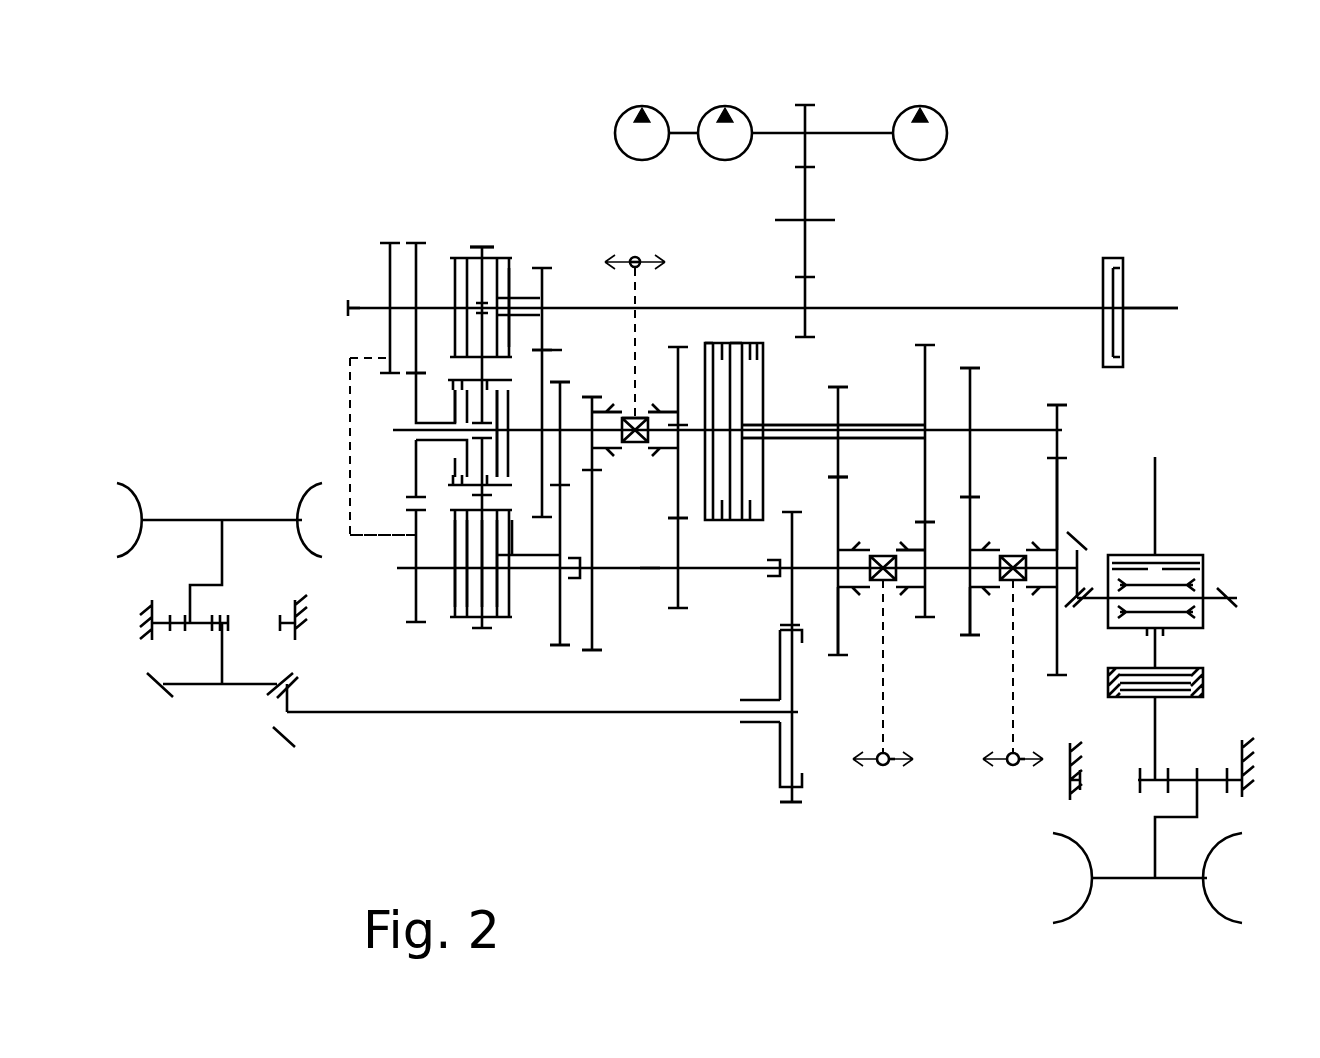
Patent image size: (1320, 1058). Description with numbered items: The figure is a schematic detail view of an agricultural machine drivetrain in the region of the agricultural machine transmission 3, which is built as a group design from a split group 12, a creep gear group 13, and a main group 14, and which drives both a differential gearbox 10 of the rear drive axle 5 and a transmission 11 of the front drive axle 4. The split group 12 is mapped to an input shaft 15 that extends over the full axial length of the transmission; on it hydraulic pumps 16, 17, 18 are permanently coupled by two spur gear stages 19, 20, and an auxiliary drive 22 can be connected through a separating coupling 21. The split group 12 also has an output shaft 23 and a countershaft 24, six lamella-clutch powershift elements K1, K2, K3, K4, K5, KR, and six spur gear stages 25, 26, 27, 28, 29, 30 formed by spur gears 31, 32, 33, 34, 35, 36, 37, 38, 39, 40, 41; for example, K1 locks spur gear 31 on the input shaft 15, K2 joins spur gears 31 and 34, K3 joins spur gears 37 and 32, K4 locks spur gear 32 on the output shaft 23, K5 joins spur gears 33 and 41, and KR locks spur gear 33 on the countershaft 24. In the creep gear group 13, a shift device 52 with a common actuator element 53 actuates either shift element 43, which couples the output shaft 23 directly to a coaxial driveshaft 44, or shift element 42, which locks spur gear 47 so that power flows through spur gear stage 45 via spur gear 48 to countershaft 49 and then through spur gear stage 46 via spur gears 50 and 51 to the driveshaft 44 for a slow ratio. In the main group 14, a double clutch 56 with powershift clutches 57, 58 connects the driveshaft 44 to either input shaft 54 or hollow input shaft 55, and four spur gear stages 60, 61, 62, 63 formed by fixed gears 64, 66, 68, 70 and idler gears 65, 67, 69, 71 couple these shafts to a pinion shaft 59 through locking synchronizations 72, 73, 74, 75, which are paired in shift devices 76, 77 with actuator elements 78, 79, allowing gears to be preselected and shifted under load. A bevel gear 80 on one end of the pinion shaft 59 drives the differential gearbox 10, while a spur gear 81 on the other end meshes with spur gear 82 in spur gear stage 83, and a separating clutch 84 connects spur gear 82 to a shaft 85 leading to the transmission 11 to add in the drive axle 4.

The agricultural machine transmission 3 is at (246, 124).
The drive axle 4 is at (190, 568).
The drive axle 5 is at (1200, 650).
The differential gearbox 10 is at (1195, 535).
The transmission 11 is at (268, 756).
The split group 12 is at (476, 168).
The creep gear group 13 is at (632, 668).
The main group 14 is at (937, 322).
The input shaft 15 is at (348, 306).
The hydraulic pump 16 is at (638, 105).
The hydraulic pump 17 is at (733, 105).
The hydraulic pump 18 is at (932, 106).
The spur gear stage 19 is at (822, 274).
The spur gear stage 20 is at (822, 164).
The separating coupling 21 is at (1113, 258).
The auxiliary drive 22 is at (1170, 304).
The output shaft 23 is at (393, 430).
The countershaft 24 is at (412, 640).
The spur gear stage 25 is at (413, 300).
The spur gear stage 26 is at (482, 612).
The spur gear stage 27 is at (546, 346).
The spur gear stage 28 is at (388, 300).
The spur gear stage 29 is at (350, 360).
The spur gear stage 30 is at (500, 586).
The spur gear 31 is at (482, 245).
The spur gear 32 is at (512, 300).
The spur gear 33 is at (467, 632).
The spur gear 34 is at (543, 268).
The spur gear 35 is at (560, 385).
The spur gear 36 is at (470, 362).
The spur gear 37 is at (414, 460).
The spur gear 38 is at (406, 355).
The spur gear 39 is at (415, 546).
The spur gear 40 is at (560, 392).
The spur gear 41 is at (560, 632).
The shift element 42 is at (612, 410).
The shift element 43 is at (640, 414).
The driveshaft 44 is at (680, 345).
The spur gear stage 45 is at (594, 560).
The spur gear stage 46 is at (690, 570).
The spur gear 47 is at (598, 396).
The spur gear 48 is at (594, 662).
The countershaft 49 is at (650, 570).
The spur gear 50 is at (638, 447).
The spur gear 51 is at (665, 410).
The shift device 52 is at (628, 250).
The actuator element 53 is at (637, 255).
The input shaft 54 is at (968, 366).
The input shaft 55 is at (870, 425).
The double clutch 56 is at (733, 336).
The powershift clutch 57 is at (707, 343).
The powershift clutch 58 is at (750, 343).
The pinion shaft 59 is at (1080, 585).
The spur gear stage 60 is at (1062, 454).
The spur gear stage 61 is at (832, 470).
The spur gear stage 62 is at (980, 476).
The spur gear stage 63 is at (920, 518).
The fixed gear 64 is at (1054, 403).
The idler gear 65 is at (1057, 505).
The fixed gear 66 is at (838, 386).
The idler gear 67 is at (838, 496).
The fixed gear 68 is at (838, 386).
The idler gear 69 is at (968, 616).
The fixed gear 70 is at (920, 344).
The idler gear 71 is at (935, 550).
The shift element 72 is at (1030, 606).
The shift element 73 is at (860, 616).
The shift element 74 is at (990, 606).
The shift element 75 is at (900, 606).
The shift device 76 is at (1011, 771).
The shift device 77 is at (881, 771).
The actuator element 78 is at (1020, 766).
The actuator element 79 is at (890, 766).
The bevel gear 80 is at (1075, 530).
The spur gear 81 is at (790, 585).
The spur gear 82 is at (798, 804).
The spur gear stage 83 is at (770, 700).
The separating clutch 84 is at (790, 770).
The shaft 85 is at (560, 660).
The powershift element K1 is at (460, 300).
The powershift element K2 is at (500, 298).
The powershift element K3 is at (457, 410).
The powershift element K4 is at (500, 415).
The powershift element K5 is at (510, 622).
The powershift element KR is at (455, 640).